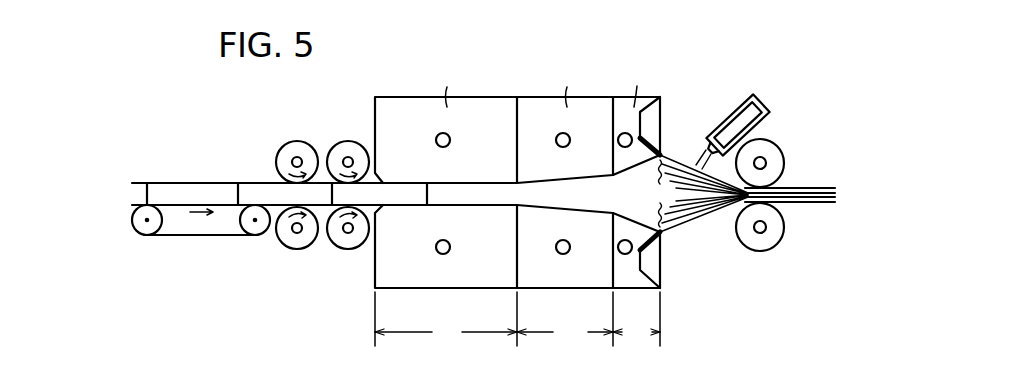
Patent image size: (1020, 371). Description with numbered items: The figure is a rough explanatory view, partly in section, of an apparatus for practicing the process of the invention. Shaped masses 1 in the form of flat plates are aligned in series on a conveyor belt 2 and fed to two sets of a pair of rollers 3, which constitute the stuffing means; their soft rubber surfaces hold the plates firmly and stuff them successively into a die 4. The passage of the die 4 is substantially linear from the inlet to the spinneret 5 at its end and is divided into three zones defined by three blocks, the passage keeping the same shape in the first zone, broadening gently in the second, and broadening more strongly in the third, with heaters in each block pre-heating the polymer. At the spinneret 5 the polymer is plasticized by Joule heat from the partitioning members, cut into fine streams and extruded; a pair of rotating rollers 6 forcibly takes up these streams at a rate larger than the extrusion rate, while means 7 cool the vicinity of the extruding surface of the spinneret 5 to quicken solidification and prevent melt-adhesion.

The shaped masses 1 is at (200, 183).
The conveyor belt 2 is at (220, 238).
The pair of rollers 3 is at (332, 143).
The die 4 is at (408, 241).
The spinneret 5 is at (673, 176).
The pair of rotating rollers 6 is at (789, 143).
The cooling means 7 is at (760, 100).